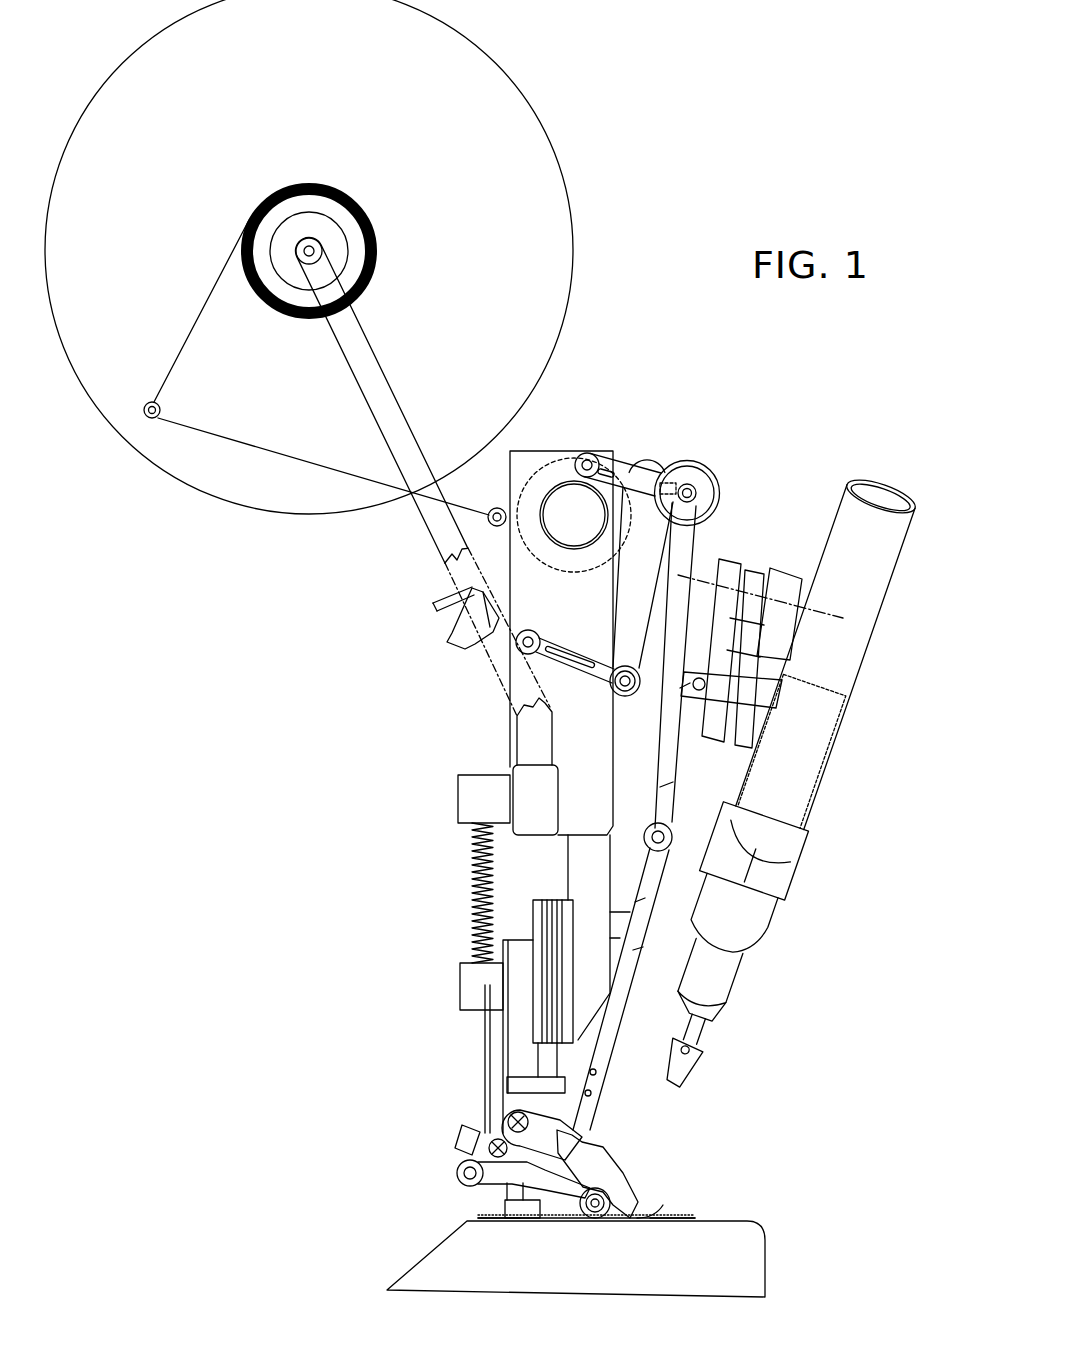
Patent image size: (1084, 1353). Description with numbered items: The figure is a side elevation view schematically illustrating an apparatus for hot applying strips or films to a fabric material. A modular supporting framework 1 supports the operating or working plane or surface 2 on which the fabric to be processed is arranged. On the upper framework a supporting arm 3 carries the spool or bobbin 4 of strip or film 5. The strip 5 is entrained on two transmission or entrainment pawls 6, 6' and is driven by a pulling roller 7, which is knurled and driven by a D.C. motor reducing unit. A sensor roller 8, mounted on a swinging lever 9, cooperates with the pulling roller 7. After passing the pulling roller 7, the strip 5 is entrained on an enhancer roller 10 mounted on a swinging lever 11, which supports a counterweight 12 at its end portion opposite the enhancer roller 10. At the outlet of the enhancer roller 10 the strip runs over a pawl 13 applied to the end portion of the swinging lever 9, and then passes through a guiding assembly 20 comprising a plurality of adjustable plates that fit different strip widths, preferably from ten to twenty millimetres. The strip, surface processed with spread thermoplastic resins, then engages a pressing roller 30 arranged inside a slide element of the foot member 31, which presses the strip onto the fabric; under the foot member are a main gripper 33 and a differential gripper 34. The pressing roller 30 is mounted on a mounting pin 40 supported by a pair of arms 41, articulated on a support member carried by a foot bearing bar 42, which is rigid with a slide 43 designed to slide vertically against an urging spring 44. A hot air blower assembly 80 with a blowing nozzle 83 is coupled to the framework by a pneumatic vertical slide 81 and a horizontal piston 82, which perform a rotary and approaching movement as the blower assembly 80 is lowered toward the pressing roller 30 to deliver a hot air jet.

The modular supporting framework 1 is at (767, 1263).
The operating or working plane or surface 2 is at (710, 1212).
The supporting arm 3 is at (380, 391).
The spool or bobbin 4 is at (373, 250).
The strip or film 5 is at (256, 451).
The transmission or entrainment pawl 6 is at (184, 362).
The transmission or entrainment pawl 6' is at (434, 556).
The pulling roller 7 is at (557, 470).
The sensor roller 8 is at (658, 462).
The swinging lever 9 is at (620, 462).
The enhancer roller 10 is at (627, 692).
The swinging lever 11 is at (563, 657).
The counterweight 12 is at (463, 650).
The pawl 13 is at (713, 472).
The guiding assembly 20 is at (638, 985).
The pressing roller 30 is at (601, 1221).
The foot member 31 is at (572, 1217).
The main gripper 33 is at (488, 1222).
The differential gripper 34 is at (675, 1220).
The mounting pin 40 is at (595, 1219).
The arms 41 is at (527, 1175).
The foot bearing bar 42 is at (513, 1150).
The slide 43 is at (493, 1050).
The urging spring 44 is at (472, 870).
The hot air blower assembly 80 is at (807, 820).
The pneumatic vertical slide 81 is at (731, 690).
The horizontal piston 82 is at (759, 701).
The blowing nozzle 83 is at (667, 1090).